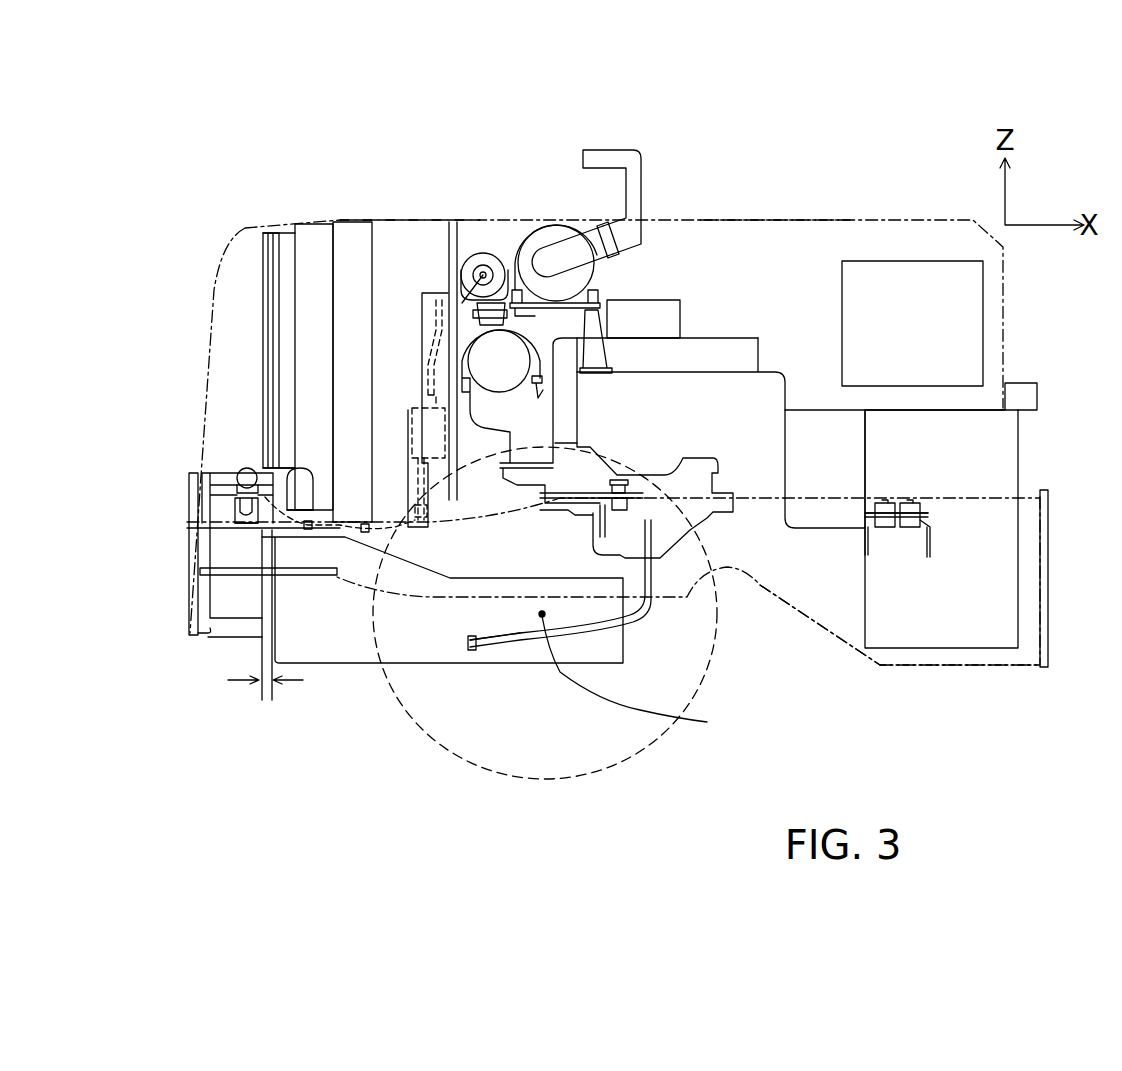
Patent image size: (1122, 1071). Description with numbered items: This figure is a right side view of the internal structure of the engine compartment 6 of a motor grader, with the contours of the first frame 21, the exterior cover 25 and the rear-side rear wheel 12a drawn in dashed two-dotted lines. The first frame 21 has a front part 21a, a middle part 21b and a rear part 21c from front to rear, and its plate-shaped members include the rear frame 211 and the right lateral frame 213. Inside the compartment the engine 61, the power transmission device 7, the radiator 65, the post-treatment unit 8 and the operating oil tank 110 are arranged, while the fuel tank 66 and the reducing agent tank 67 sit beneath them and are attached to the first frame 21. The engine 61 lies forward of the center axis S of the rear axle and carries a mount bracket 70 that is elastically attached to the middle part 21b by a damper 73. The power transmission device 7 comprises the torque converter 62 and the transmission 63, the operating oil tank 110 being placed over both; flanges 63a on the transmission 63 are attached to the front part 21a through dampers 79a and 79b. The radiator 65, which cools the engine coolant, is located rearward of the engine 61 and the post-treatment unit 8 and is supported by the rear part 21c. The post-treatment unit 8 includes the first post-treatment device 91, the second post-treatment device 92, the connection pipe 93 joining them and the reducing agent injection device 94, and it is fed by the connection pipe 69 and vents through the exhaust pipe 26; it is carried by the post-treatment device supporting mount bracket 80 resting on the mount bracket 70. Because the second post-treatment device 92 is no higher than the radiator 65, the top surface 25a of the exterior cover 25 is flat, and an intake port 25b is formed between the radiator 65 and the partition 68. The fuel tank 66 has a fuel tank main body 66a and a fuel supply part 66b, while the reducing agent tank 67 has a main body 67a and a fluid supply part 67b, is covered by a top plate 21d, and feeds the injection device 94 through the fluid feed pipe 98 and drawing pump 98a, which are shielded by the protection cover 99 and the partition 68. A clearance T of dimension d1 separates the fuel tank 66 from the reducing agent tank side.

The exterior cover 25 is at (1005, 287).
The top surface 25a is at (850, 220).
The intake port 25b is at (414, 212).
The front part 21a is at (997, 553).
The radiator 65 is at (355, 277).
The partition 68 is at (428, 292).
The protection cover 99 is at (420, 342).
The drawing pump 98a is at (413, 407).
The fluid feed pipe 98 is at (410, 450).
The connection pipe 93 is at (448, 290).
The reducing agent injection device 94 is at (452, 297).
The first post-treatment device 91 is at (465, 270).
The post-treatment unit 8 is at (505, 240).
The second post-treatment device 92 is at (547, 262).
The exhaust pipe 26 is at (628, 162).
The connection pipe 69 is at (600, 312).
The engine compartment 6 is at (705, 294).
The post-treatment device supporting mount bracket 80 is at (530, 423).
The engine 61 is at (727, 397).
The mount bracket 70 is at (693, 480).
The damper 73 is at (600, 505).
The operating oil tank 110 is at (915, 287).
The torque converter 62 is at (832, 437).
The transmission 63 is at (958, 510).
The power transmission device 7 is at (1078, 335).
The damper 79a is at (908, 522).
The damper 79b is at (883, 522).
The flange 63a is at (930, 515).
The top plate 21d is at (217, 472).
The fuel tank main body 66a is at (345, 505).
The fuel supply part 66b is at (302, 510).
The fuel tank 66 is at (128, 315).
The fluid supply part 67b is at (235, 493).
The reducing agent tank main body 67a is at (237, 532).
The reducing agent tank 67 is at (120, 485).
The rear frame 211 is at (195, 602).
The clearance T is at (268, 600).
The dimension d1 is at (265, 705).
The rear part 21c is at (352, 545).
The first frame 21 is at (770, 600).
The middle part 21b is at (557, 672).
The rear wheel 12a is at (412, 720).
The center axis S is at (636, 679).
The right lateral frame 213 is at (908, 664).